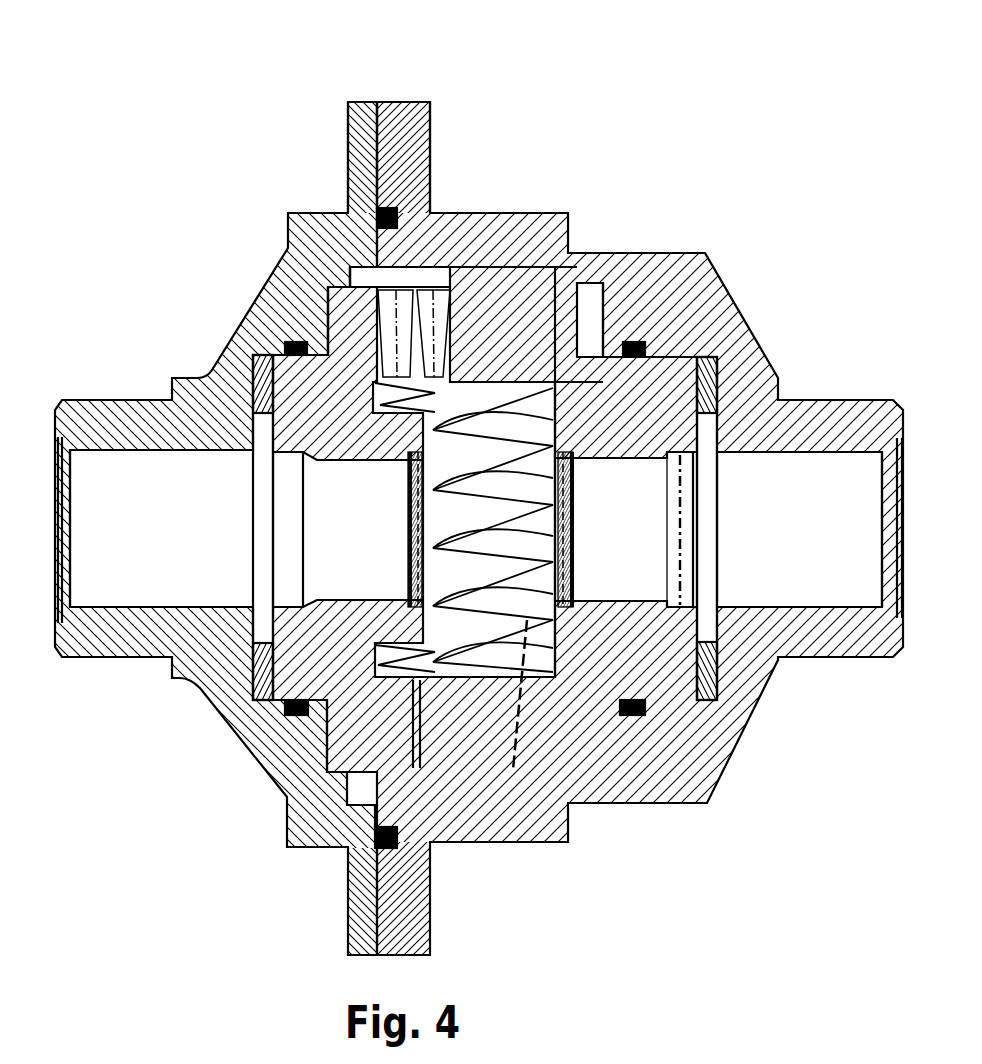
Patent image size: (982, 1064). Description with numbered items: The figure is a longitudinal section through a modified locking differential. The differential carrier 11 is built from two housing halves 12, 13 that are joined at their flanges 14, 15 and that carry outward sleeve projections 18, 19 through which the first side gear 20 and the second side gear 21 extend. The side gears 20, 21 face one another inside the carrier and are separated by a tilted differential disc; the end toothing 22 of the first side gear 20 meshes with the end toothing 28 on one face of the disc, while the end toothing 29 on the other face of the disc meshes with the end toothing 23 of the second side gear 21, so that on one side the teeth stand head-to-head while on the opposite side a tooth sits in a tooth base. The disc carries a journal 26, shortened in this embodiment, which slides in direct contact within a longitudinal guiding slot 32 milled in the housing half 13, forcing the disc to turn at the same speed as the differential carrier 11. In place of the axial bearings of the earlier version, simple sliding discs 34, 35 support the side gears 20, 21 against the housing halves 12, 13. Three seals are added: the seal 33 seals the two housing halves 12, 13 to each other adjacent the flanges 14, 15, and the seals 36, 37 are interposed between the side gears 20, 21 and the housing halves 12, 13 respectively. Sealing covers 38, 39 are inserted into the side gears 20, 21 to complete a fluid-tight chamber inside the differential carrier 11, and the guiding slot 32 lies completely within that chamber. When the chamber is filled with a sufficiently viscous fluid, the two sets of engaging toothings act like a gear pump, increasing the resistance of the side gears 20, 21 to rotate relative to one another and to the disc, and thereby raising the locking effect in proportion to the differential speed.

The differential carrier 11 is at (258, 223).
The housing half 12 is at (260, 280).
The housing half 13 is at (726, 286).
The flange 14 is at (360, 125).
The flange 15 is at (405, 125).
The sleeve projection 18 is at (96, 410).
The sleeve projection 19 is at (855, 400).
The first side gear 20 is at (283, 340).
The second side gear 21 is at (577, 358).
The end toothing 22 is at (343, 310).
The end toothing 23 is at (548, 290).
The journal 26 is at (472, 288).
The end toothing 28 is at (430, 325).
The end toothing 29 is at (600, 325).
The longitudinal guiding slot 32 is at (535, 285).
The seal 33 is at (398, 216).
The sliding disc 34 is at (258, 392).
The sliding disc 35 is at (705, 392).
The seal 36 is at (262, 375).
The seal 37 is at (648, 347).
The sealing cover 38 is at (408, 528).
The sealing cover 39 is at (573, 528).